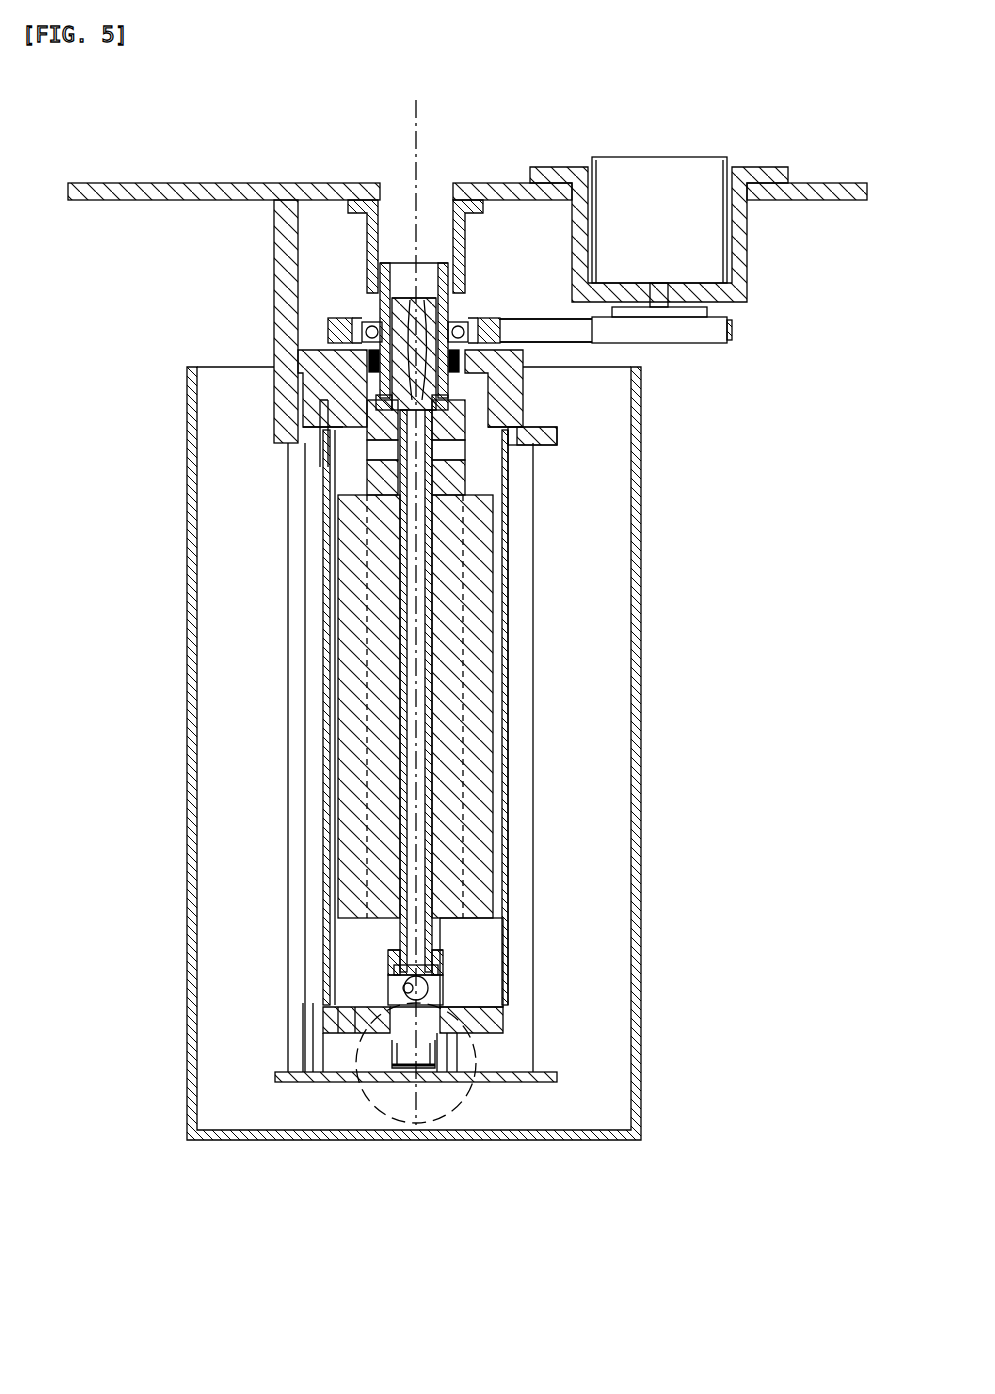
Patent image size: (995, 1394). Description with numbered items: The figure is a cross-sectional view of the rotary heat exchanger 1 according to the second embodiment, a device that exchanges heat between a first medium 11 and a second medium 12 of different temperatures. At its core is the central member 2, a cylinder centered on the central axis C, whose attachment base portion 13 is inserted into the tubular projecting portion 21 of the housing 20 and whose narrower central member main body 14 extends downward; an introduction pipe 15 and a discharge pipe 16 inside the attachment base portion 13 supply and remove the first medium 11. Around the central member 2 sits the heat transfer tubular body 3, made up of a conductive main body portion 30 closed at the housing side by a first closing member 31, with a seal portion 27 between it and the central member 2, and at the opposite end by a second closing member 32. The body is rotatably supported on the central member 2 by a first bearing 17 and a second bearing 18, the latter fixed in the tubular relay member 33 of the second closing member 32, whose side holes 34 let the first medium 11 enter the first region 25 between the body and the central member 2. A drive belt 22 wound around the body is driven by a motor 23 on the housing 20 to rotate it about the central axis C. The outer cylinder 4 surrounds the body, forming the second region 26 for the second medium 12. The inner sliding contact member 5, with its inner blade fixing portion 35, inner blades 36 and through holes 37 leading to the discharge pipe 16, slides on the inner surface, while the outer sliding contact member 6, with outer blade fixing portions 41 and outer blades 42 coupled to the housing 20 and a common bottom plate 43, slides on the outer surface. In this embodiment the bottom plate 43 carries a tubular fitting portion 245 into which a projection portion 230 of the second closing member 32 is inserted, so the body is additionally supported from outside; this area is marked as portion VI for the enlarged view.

The rotary heat exchanger 1 is at (632, 130).
The central member 2 is at (432, 580).
The heat transfer tubular body 3 is at (508, 757).
The outer cylinder 4 is at (641, 848).
The inner sliding contact member 5 is at (478, 492).
The outer sliding contact member 6 is at (530, 1012).
The first medium 11 is at (490, 972).
The second medium 12 is at (232, 773).
The attachment base portion 13 is at (372, 290).
The central member main body 14 is at (403, 567).
The introduction pipe 15 is at (432, 285).
The discharge pipe 16 is at (370, 362).
The first bearing 17 is at (366, 332).
The second bearing 18 is at (388, 962).
The housing 20 is at (172, 182).
The tubular projecting portion 21 is at (367, 238).
The drive belt 22 is at (535, 322).
The motor 23 is at (700, 160).
The first region 25 is at (485, 940).
The second region 26 is at (232, 808).
The seal portion 27 is at (525, 375).
The main body portion 30 is at (506, 690).
The first closing member 31 is at (527, 355).
The second closing member 32 is at (340, 1033).
The relay member 33 is at (355, 1033).
The holes 34 is at (386, 1000).
The inner blade fixing portion 35 is at (378, 482).
The inner blades 36 is at (350, 707).
The through holes 37 is at (372, 450).
The outer blade fixing portion 41 is at (532, 812).
The outer blades 42 is at (303, 866).
The bottom plate 43 is at (540, 1082).
The projection portion 230 is at (413, 1068).
The fitting portion 245 is at (402, 1068).
The central axis C is at (408, 112).
The portion VI is at (458, 1108).